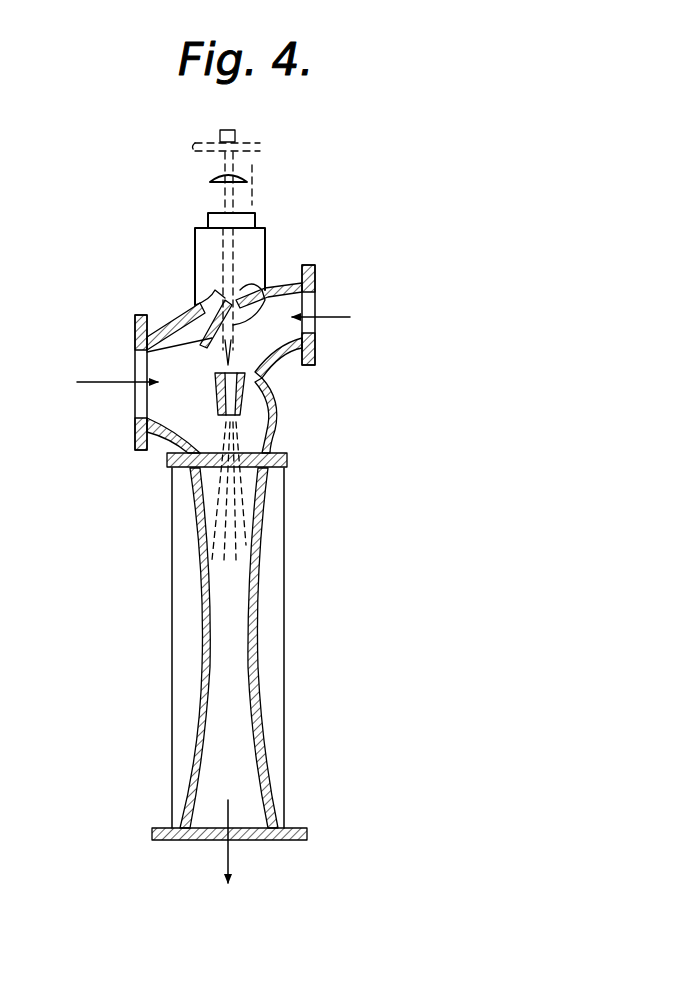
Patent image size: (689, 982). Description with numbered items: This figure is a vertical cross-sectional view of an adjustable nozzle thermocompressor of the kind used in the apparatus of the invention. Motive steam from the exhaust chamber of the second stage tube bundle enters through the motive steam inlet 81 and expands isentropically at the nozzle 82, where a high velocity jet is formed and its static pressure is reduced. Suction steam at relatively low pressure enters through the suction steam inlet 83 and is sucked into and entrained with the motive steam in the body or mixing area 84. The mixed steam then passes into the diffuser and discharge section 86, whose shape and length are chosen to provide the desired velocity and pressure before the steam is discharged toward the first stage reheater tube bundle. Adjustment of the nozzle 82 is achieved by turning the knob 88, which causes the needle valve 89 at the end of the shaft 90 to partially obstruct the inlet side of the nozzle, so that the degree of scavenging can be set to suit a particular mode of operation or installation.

The motive steam inlet 81 is at (308, 300).
The nozzle 82 is at (207, 397).
The suction steam inlet 83 is at (143, 365).
The body or mixing area 84 is at (255, 412).
The diffuser and discharge section 86 is at (277, 787).
The knob 88 is at (260, 145).
The needle valve 89 is at (202, 340).
The shaft 90 is at (267, 290).